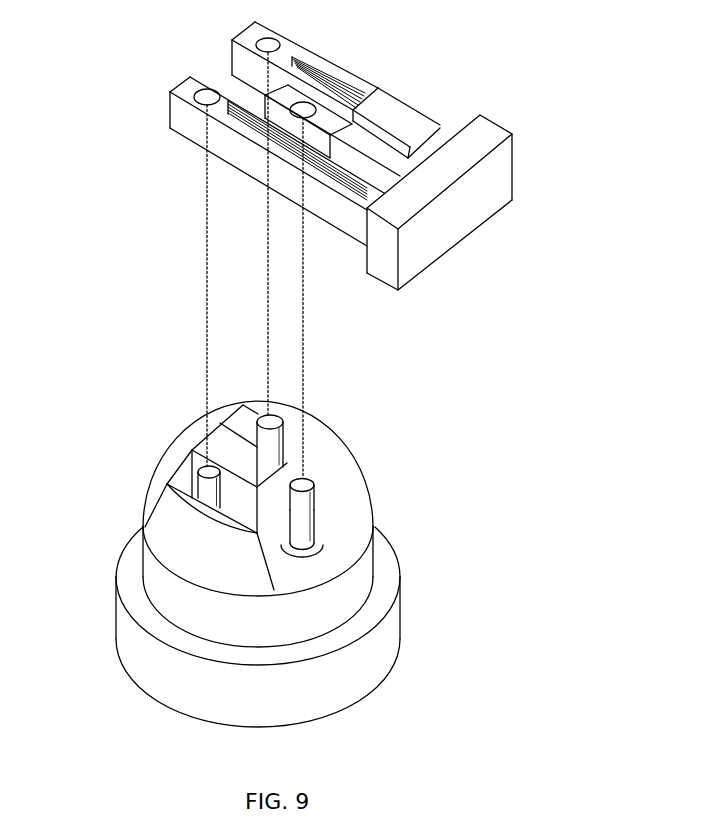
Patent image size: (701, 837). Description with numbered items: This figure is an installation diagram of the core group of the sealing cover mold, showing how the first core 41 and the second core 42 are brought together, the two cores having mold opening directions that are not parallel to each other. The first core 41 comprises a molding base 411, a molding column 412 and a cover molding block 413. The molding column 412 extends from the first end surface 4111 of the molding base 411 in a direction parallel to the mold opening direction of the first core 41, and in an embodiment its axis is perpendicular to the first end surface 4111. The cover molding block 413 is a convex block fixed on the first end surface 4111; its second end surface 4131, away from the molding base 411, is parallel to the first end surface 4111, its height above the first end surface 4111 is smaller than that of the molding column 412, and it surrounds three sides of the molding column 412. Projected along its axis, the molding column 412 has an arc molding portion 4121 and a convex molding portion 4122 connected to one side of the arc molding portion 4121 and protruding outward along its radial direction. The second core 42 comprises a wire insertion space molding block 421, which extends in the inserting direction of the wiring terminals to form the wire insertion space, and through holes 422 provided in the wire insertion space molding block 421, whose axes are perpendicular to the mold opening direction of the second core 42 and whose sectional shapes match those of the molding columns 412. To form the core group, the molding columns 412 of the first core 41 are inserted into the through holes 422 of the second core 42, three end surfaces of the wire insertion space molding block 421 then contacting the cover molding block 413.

The first core 41 is at (120, 688).
The molding base 411 is at (407, 643).
The first end surface 4111 is at (327, 563).
The molding column 412 is at (505, 449).
The arc molding portion 4121 is at (320, 486).
The convex molding portion 4122 is at (320, 514).
The cover molding block 413 is at (165, 437).
The second end surface 4131 is at (193, 440).
The second core 42 is at (510, 228).
The wire insertion space molding block 421 is at (408, 95).
The through hole 422 is at (188, 97).